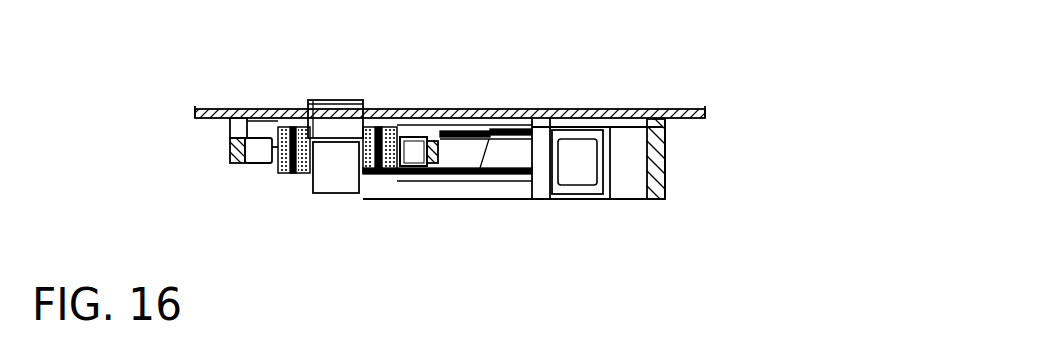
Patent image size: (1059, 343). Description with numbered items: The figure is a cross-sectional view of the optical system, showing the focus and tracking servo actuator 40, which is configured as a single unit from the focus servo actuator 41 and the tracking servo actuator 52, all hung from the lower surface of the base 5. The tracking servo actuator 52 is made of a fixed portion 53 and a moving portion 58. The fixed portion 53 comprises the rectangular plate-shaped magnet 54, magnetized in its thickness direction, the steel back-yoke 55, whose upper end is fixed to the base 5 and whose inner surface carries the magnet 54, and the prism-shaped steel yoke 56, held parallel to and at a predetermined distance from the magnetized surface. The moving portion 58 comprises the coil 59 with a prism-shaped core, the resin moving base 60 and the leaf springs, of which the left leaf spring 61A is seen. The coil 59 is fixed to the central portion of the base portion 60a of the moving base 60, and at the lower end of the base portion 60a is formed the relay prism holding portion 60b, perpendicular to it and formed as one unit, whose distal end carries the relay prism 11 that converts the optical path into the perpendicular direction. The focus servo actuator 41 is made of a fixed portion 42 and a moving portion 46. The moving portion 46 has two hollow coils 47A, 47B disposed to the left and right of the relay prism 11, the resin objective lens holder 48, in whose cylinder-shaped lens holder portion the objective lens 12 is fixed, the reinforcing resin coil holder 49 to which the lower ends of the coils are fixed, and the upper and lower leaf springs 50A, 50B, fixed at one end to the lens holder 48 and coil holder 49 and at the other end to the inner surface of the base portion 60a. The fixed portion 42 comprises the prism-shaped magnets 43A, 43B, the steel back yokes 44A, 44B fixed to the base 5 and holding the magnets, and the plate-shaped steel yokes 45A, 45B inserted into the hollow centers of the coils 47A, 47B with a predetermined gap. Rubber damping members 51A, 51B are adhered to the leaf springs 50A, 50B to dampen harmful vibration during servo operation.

The base 5 is at (205, 112).
The relay prism 11 is at (338, 180).
The objective lens 12 is at (323, 100).
The focus and tracking servo actuator 40 is at (218, 165).
The focus servo actuator 41 is at (222, 132).
The fixed portion 42 is at (555, 255).
The prism shaped magnet 43A is at (252, 164).
The prism shaped magnet 43B is at (412, 173).
The steel back yoke 44A is at (233, 164).
The steel back yoke 44B is at (455, 176).
The rectangular plate-shaped steel yoke 45A is at (297, 174).
The rectangular plate-shaped steel yoke 45B is at (380, 175).
The moving portion 46 is at (578, 55).
The coil 47A is at (262, 132).
The coil 47B is at (397, 125).
The objective lens holder 48 is at (363, 100).
The coil holder 49 is at (283, 173).
The leaf spring 50A is at (449, 131).
The leaf spring 50B is at (453, 170).
The rubber damping member 51A is at (520, 130).
The rubber damping member 51B is at (514, 167).
The tracking servo actuator 52 is at (666, 167).
The fixed portion 53 is at (718, 55).
The plate-shaped magnet 54 is at (630, 139).
The steel back-yoke 55 is at (660, 120).
The prism-shaped steel yoke 56 is at (580, 149).
The moving portion 58 is at (745, 283).
The coil 59 is at (603, 182).
The moving base 60 is at (708, 243).
The base portion 60a is at (542, 188).
The relay prism holding portion 60b is at (517, 190).
The leaf spring 61A is at (485, 178).